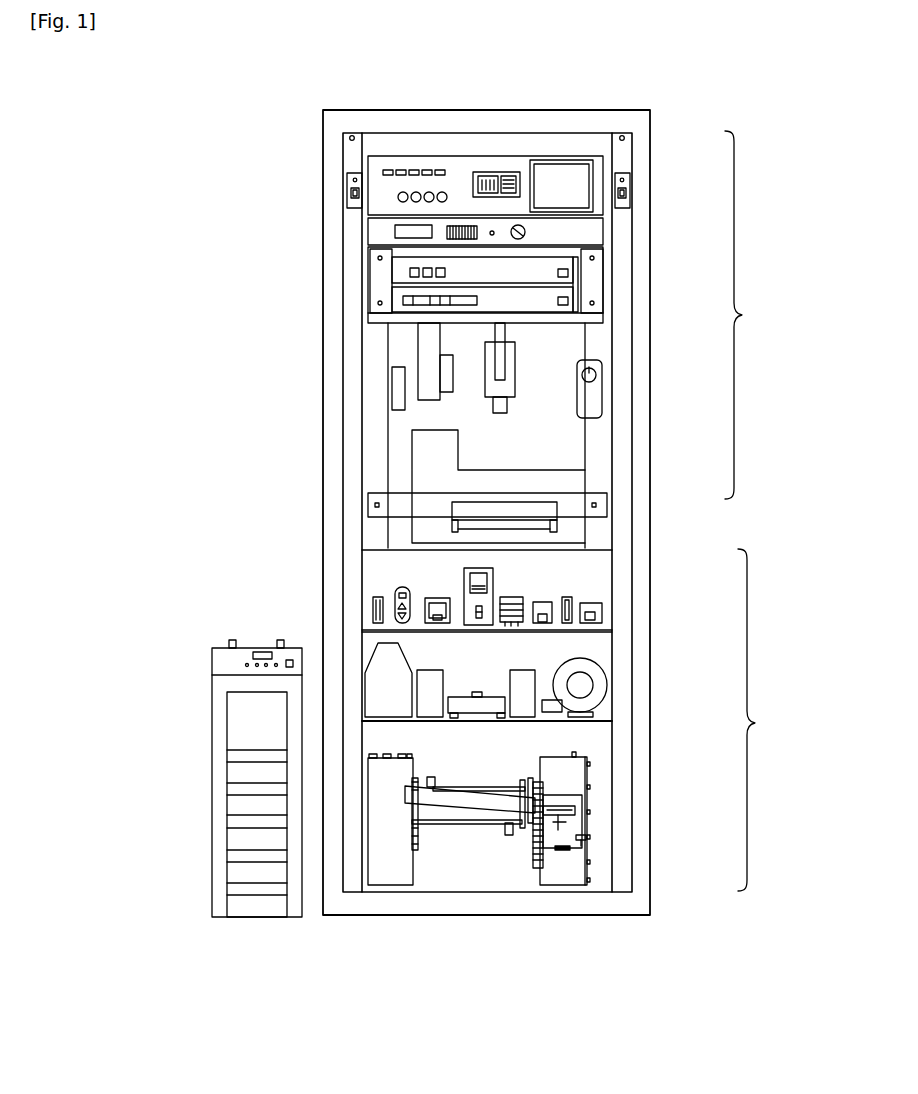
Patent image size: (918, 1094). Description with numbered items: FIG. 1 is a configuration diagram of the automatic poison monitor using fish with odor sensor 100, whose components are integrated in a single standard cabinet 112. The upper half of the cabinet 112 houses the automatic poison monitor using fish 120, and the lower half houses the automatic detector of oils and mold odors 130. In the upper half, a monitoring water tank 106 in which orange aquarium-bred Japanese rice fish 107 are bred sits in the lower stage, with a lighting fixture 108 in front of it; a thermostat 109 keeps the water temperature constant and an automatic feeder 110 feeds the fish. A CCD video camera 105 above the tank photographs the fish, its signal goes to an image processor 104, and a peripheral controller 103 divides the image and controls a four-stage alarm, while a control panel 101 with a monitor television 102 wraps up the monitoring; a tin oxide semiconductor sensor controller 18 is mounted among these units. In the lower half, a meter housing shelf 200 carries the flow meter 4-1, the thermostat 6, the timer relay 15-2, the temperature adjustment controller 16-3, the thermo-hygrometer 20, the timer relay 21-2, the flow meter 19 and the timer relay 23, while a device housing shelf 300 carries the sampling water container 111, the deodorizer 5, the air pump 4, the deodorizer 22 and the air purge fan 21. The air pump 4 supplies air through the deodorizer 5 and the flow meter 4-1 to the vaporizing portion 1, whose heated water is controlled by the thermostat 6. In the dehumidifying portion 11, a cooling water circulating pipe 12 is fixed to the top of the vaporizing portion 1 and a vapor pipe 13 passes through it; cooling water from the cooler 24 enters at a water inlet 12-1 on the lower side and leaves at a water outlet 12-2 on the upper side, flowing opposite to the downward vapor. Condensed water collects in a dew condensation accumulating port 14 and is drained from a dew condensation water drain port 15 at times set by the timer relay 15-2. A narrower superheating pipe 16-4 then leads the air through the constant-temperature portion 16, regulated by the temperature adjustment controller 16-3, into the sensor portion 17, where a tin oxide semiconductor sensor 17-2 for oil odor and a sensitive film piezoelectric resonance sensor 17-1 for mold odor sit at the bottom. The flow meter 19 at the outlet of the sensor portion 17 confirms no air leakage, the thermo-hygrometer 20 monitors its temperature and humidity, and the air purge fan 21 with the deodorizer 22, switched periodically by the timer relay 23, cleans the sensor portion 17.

The automatic poison monitor using fish with odor sensor 100 is at (356, 108).
The cabinet 112 is at (652, 114).
The control panel 101 is at (600, 160).
The monitor television 102 is at (575, 185).
The tin oxide semiconductor sensor controller 18 is at (572, 228).
The peripheral controller 103 is at (572, 270).
The image processor 104 is at (575, 298).
The CCD video camera 105 is at (516, 352).
The thermostat 109 is at (603, 392).
The automatic feeder 110 is at (392, 405).
The monitoring water tank 106 is at (555, 468).
The orange aquarium-bred Japanese rice fish 107 is at (578, 518).
The lighting fixture 108 is at (462, 534).
The automatic poison monitor using fish 120 is at (753, 315).
The automatic detector of oils and mold odors 130 is at (766, 720).
The flow meter 4-1 is at (373, 607).
The thermostat 6 is at (398, 588).
The timer relay 15-2 is at (433, 598).
The temperature adjustment controller 16-3 is at (463, 582).
The thermo-hygrometer 20 is at (512, 597).
The timer relay 21-2 is at (547, 602).
The flow meter 19 is at (568, 597).
The timer relay 23 is at (602, 612).
The meter housing shelf 200 is at (588, 630).
The sampling water container 111 is at (372, 665).
The deodorizer 5 is at (428, 670).
The air pump 4 is at (475, 692).
The deodorizer 22 is at (521, 670).
The air purge fan 21 is at (598, 686).
The device housing shelf 300 is at (590, 722).
The vaporizing portion 1 is at (390, 870).
The cooling water circulating pipe 12 is at (472, 825).
The water outlet 12-2 is at (430, 777).
The dehumidifying portion 11 is at (468, 775).
The vapor pipe 13 is at (452, 812).
The water inlet 12-1 is at (508, 836).
The dew condensation water drain port 15 is at (530, 826).
The dew condensation accumulating port 14 is at (536, 800).
The constant-temperature portion 16 is at (568, 772).
The sensor portion 17 is at (567, 793).
The tin oxide semiconductor sensor 17-2 is at (583, 843).
The superheating pipe 16-4 is at (585, 829).
The sensitive film piezoelectric resonance sensor 17-1 is at (562, 851).
The cooler 24 is at (236, 840).